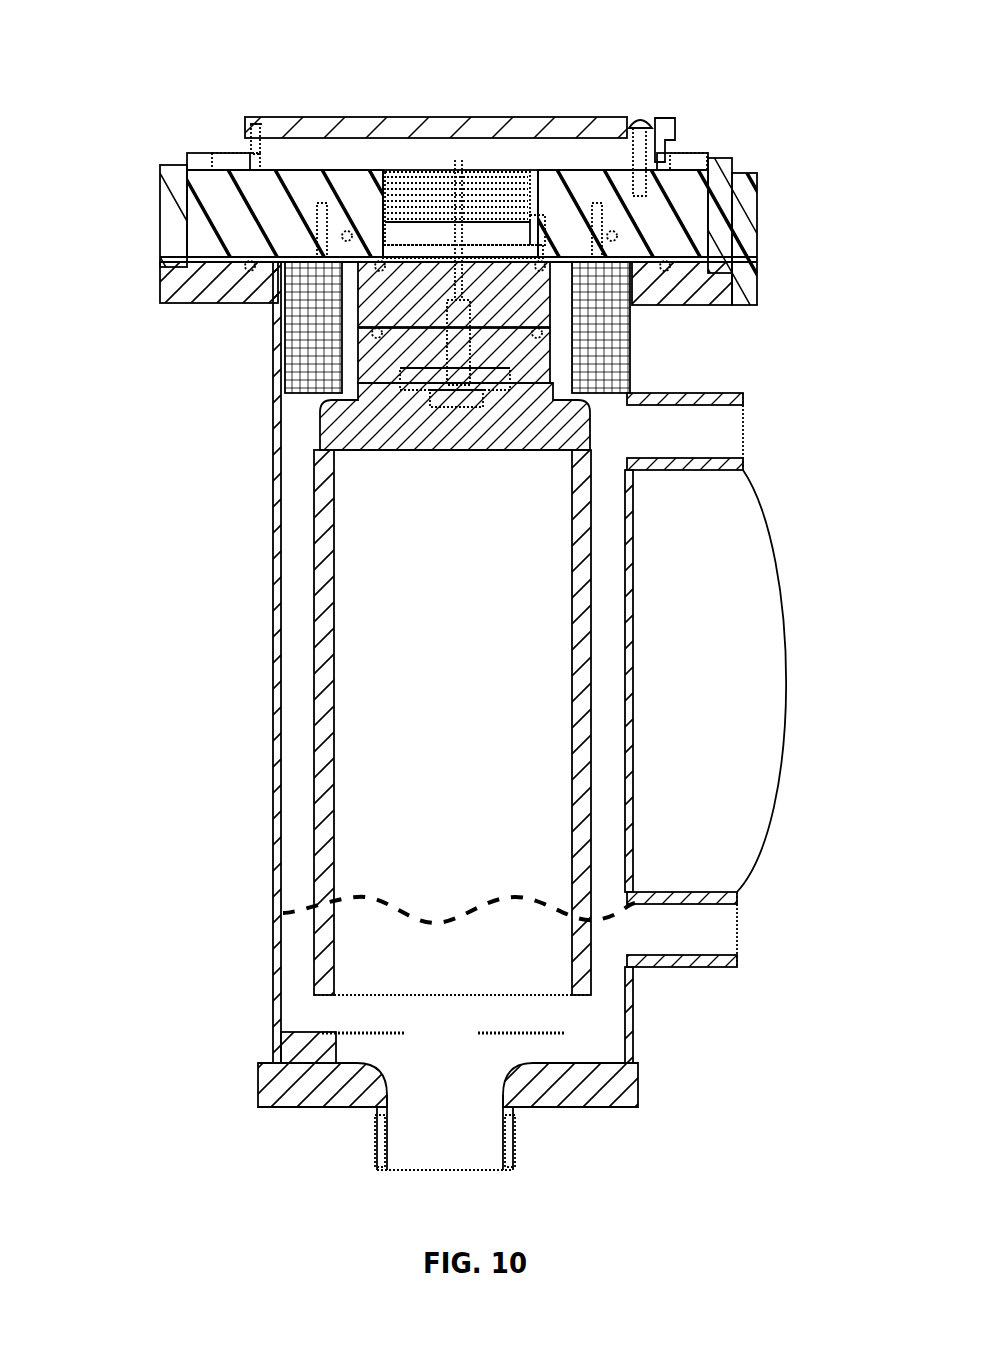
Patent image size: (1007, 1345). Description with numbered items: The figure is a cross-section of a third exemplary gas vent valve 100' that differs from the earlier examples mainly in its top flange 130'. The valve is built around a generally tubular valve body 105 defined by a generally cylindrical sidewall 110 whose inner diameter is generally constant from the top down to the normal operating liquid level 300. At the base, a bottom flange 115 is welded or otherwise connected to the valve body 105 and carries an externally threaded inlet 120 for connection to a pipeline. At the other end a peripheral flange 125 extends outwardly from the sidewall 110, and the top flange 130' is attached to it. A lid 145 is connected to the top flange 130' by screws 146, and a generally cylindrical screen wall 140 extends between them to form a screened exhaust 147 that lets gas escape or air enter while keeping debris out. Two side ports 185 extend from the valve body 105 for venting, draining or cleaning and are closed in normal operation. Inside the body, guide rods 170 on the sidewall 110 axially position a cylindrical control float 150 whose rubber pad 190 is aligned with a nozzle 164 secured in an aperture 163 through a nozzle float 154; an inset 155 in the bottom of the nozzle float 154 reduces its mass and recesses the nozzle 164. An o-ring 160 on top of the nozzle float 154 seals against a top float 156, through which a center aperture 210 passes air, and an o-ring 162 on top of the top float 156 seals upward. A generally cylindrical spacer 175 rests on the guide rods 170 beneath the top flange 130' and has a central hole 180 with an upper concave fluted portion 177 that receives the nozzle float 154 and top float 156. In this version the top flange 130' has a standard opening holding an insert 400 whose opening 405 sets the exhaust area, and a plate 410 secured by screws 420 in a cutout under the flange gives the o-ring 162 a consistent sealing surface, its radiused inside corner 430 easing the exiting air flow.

The gas vent valve 100' is at (111, 29).
The valve body 105 is at (225, 729).
The sidewall 110 is at (276, 848).
The bottom flange 115 is at (262, 1072).
The inlet 120 is at (513, 1132).
The peripheral flange 125 is at (165, 282).
The top flange 130' is at (472, 230).
The screen wall 140 is at (263, 153).
The lid 145 is at (668, 118).
The screws 146 is at (657, 160).
The screened exhaust 147 is at (243, 141).
The control float 150 is at (595, 760).
The nozzle float 154 is at (360, 347).
The inset 155 is at (503, 395).
The top float 156 is at (356, 300).
The o-ring 160 is at (595, 148).
The o-ring 162 is at (349, 232).
The aperture 163 is at (458, 388).
The nozzle 164 is at (450, 387).
The guide rods 170 is at (302, 598).
The spacer 175 is at (600, 310).
The upper concave fluted portion 177 is at (560, 270).
The central hole 180 is at (559, 388).
The side ports 185 is at (718, 718).
The rubber pad 190 is at (503, 382).
The center aperture 210 is at (458, 300).
The normal operating liquid level 300 is at (527, 925).
The insert 400 is at (524, 222).
The opening 405 is at (425, 185).
The plate 410 is at (540, 238).
The screws 420 is at (323, 225).
The radiused inside corner 430 is at (515, 215).